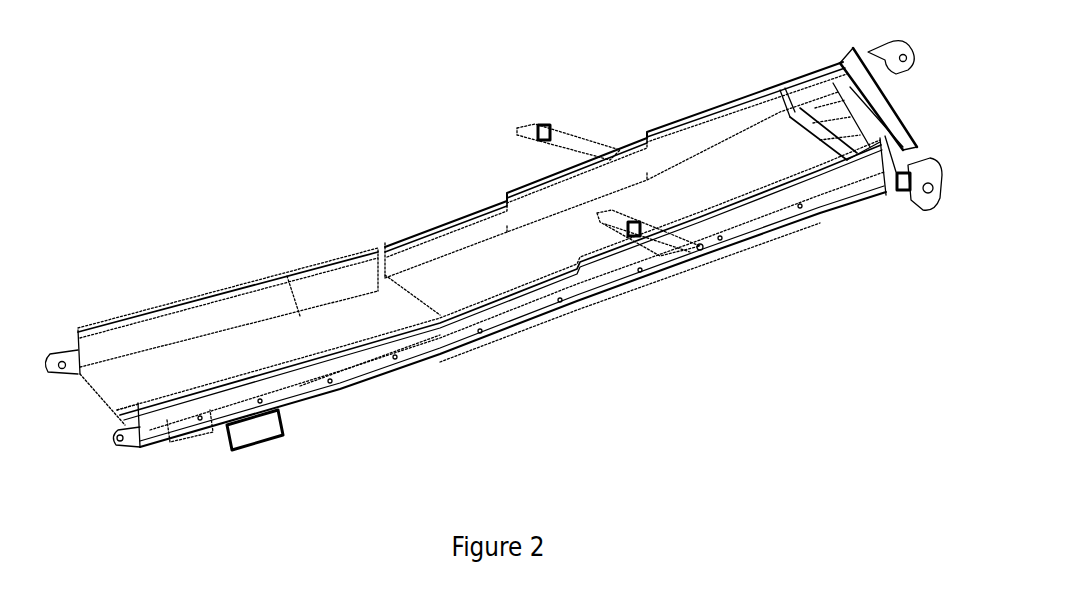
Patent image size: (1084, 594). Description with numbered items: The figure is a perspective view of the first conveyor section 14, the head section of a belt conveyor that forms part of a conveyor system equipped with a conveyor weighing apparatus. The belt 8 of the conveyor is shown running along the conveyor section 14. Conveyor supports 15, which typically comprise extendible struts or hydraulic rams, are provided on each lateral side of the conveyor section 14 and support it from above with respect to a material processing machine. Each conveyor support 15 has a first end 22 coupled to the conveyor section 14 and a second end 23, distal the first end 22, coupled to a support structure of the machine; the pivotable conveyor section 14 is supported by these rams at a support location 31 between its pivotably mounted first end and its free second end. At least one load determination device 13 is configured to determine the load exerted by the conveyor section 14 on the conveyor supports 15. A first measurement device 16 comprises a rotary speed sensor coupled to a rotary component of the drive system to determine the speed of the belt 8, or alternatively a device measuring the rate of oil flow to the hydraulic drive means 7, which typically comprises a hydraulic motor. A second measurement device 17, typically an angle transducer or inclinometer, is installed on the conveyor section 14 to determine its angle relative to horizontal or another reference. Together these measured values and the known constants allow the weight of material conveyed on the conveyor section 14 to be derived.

The hydraulic drive means 7 is at (934, 142).
The belt 8 is at (459, 229).
The load determination device 13 is at (632, 210).
The first conveyor section 14 is at (501, 293).
The conveyor support 15 is at (616, 144).
The first measurement device 16 is at (892, 229).
The second measurement device 17 is at (301, 454).
The first end 22 is at (713, 263).
The second end 23 is at (549, 206).
The support location 31 is at (764, 245).